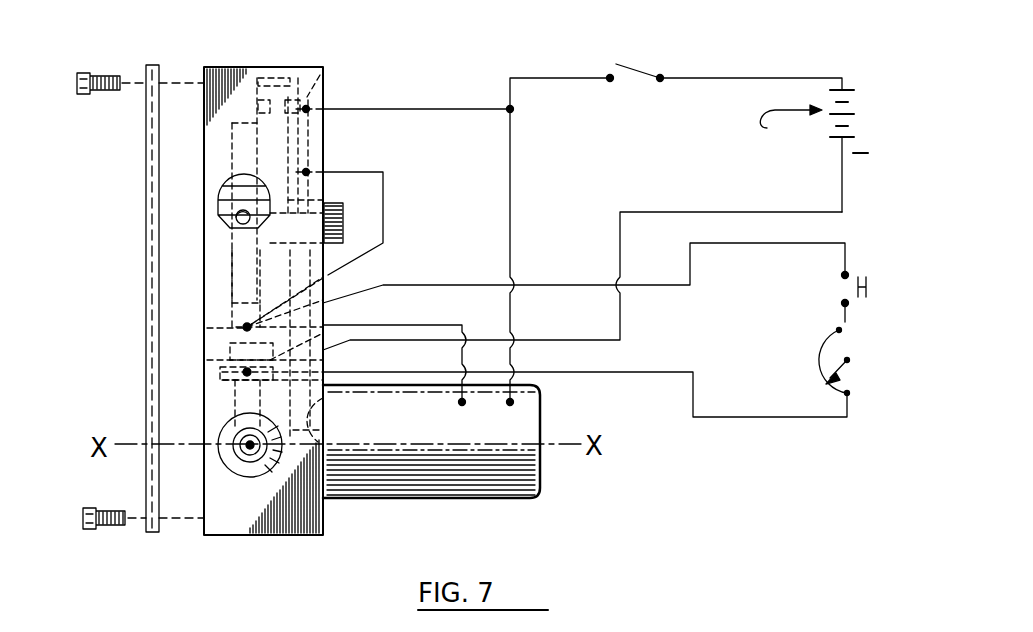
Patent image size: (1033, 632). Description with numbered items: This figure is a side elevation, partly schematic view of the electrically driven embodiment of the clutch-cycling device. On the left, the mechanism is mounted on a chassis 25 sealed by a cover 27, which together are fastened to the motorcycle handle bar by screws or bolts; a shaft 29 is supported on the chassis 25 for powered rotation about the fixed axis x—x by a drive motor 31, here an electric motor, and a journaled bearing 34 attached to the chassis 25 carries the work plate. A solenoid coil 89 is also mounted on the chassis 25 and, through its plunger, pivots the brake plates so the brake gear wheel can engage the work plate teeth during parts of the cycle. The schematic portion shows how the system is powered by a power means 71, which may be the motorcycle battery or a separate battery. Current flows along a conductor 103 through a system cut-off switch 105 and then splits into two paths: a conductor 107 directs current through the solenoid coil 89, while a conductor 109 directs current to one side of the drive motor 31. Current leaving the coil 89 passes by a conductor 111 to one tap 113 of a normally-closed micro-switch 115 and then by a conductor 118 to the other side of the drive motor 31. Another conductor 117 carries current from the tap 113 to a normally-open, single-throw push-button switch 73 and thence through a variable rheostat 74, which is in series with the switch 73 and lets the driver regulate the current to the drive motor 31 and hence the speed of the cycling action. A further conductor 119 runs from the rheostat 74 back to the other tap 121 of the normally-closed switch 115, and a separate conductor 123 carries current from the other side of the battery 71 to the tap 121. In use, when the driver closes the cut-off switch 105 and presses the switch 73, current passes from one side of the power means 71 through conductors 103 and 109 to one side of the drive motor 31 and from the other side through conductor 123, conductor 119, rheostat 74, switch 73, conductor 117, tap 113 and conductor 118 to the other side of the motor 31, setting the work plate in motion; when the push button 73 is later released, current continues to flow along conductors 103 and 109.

The chassis 25 is at (232, 67).
The cover 27 is at (150, 163).
The shaft 29 is at (325, 410).
The drive motor 31 is at (540, 476).
The journaled bearing 34 is at (343, 222).
The power means 71 is at (762, 153).
The switch 73 is at (862, 275).
The variable rheostat 74 is at (815, 355).
The solenoid coil 89 is at (323, 80).
The conductor 103 is at (797, 76).
The system cut-off switch 105 is at (647, 67).
The conductor 107 is at (472, 108).
The conductor 109 is at (513, 155).
The conductor 111 is at (385, 182).
The tap 113 is at (247, 327).
The micro-switch 115 is at (207, 328).
The conductor 117 is at (584, 258).
The conductor 118 is at (418, 325).
The conductor 119 is at (727, 417).
The tap 121 is at (207, 360).
The conductor 123 is at (737, 212).